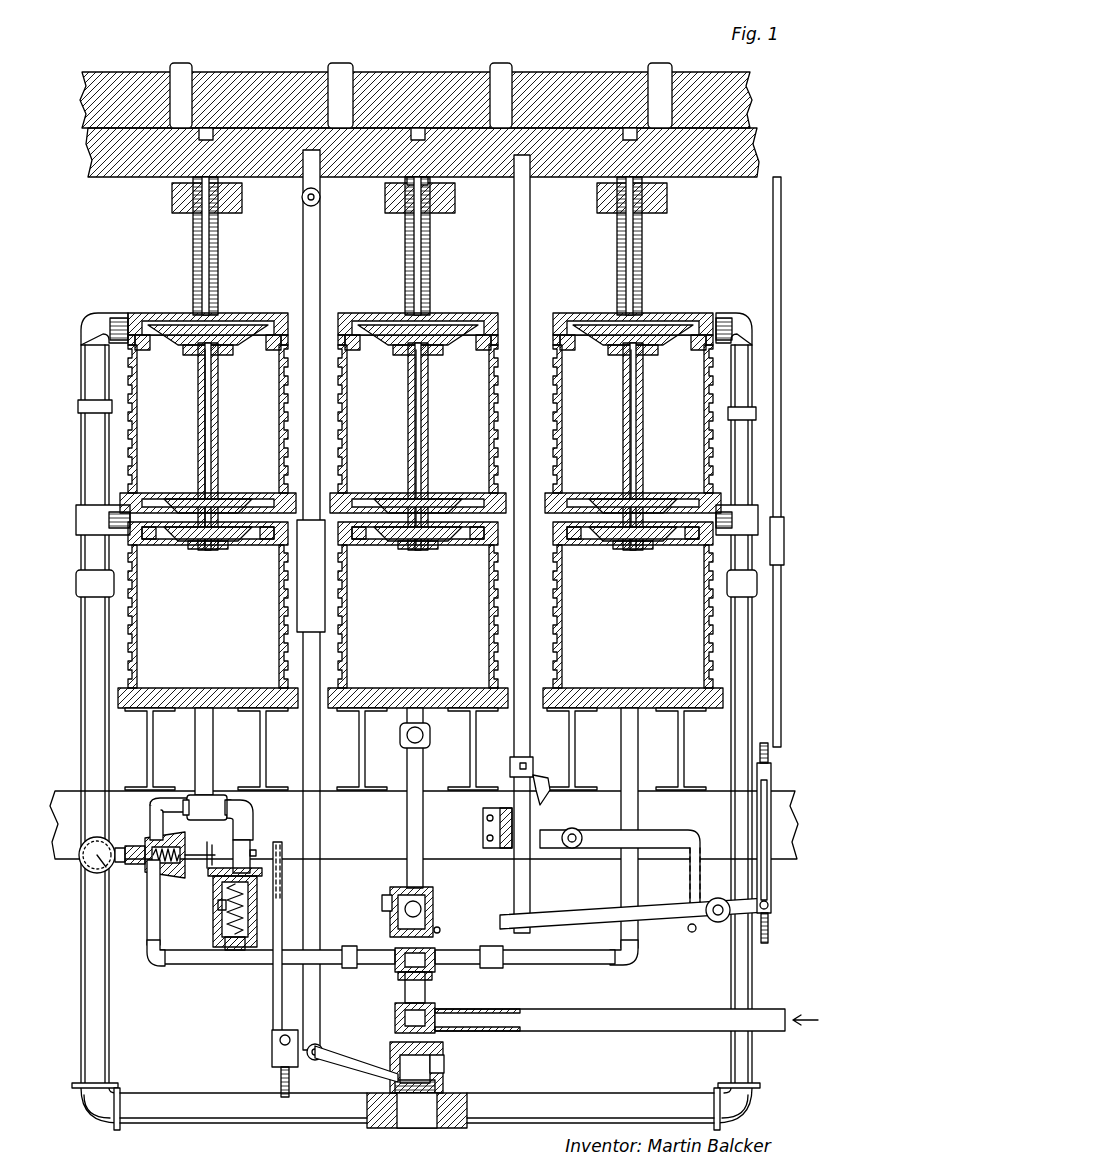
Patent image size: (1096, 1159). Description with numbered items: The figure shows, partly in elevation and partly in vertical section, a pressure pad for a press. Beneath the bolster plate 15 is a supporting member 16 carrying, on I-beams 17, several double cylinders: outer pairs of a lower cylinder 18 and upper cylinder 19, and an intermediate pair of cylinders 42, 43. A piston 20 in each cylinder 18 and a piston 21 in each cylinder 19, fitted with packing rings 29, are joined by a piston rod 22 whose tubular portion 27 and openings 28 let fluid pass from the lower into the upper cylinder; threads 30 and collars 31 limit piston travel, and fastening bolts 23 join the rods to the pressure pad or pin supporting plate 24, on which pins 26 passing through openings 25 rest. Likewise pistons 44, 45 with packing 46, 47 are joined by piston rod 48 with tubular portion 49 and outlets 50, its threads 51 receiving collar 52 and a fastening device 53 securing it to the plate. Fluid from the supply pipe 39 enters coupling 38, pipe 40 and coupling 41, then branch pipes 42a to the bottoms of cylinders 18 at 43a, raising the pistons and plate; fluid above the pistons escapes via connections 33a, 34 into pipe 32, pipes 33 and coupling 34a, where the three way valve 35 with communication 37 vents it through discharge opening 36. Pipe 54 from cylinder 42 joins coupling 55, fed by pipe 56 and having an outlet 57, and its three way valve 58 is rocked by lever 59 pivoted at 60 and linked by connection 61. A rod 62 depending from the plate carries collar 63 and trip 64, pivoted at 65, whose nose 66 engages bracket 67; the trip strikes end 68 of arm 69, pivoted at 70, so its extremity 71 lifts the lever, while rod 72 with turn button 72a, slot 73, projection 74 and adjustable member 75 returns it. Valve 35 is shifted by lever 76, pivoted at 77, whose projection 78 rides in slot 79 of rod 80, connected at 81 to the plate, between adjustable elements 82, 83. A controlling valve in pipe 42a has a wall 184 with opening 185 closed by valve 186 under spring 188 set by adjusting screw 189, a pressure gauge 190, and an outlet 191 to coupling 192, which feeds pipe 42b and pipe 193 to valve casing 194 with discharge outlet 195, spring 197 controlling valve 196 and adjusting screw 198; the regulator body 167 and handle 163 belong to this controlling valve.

The bolster plate 15 is at (755, 100).
The supporting member 16 is at (68, 859).
The I-beams 17 is at (147, 750).
The lower cylinder 18 is at (137, 645).
The upper cylinder 19 is at (137, 432).
The piston 20 is at (205, 550).
The piston 21 is at (258, 345).
The piston rod 22 is at (218, 452).
The fastening bolts 23 is at (212, 160).
The pressure pad or pin supporting plate 24 is at (105, 178).
The openings 25 is at (598, 72).
The pins 26 is at (505, 64).
The tubular portion 27 is at (203, 468).
The openings 28 is at (212, 355).
The packing rings 29 is at (145, 350).
The threads 30 is at (218, 248).
The collars 31 is at (242, 205).
The pipe 32 is at (81, 612).
The pipes 33 is at (248, 1124).
The pipe connection 33a is at (84, 535).
The pipe connection 34 is at (118, 313).
The coupling 34a is at (435, 1085).
The three way valve 35 is at (390, 1052).
The discharge opening 36 is at (444, 1063).
The communication 37 is at (395, 1020).
The coupling 38 is at (435, 1008).
The fluid supply pipe 39 is at (592, 1031).
The pipe 40 is at (405, 990).
The coupling 41 is at (395, 950).
The intermediate lower cylinder 42 is at (418, 626).
The branch pipes 42a is at (250, 965).
The pipe 42b is at (195, 748).
The intermediate upper cylinder 43 is at (418, 419).
The bottom connection 43a is at (208, 705).
The piston 44 is at (408, 550).
The piston 45 is at (388, 345).
The packing 46 is at (378, 548).
The packing 47 is at (360, 360).
The piston rod 48 is at (428, 398).
The tubular portion 49 is at (428, 461).
The outlets 50 is at (423, 355).
The threads 51 is at (430, 248).
The collar 52 is at (455, 208).
The fastening device 53 is at (440, 178).
The pipe 54 is at (425, 765).
The coupling 55 is at (433, 892).
The pipe 56 is at (433, 940).
The outlet 57 is at (382, 903).
The three way valve 58 is at (426, 905).
The lever 59 is at (595, 912).
The pivot 60 is at (714, 922).
The connection 61 is at (500, 920).
The rod 62 is at (530, 292).
The collar 63 is at (512, 762).
The trip 64 is at (550, 800).
The pivot 65 is at (545, 776).
The nose or finger portion 66 is at (510, 777).
The bracket 67 is at (512, 817).
The arm end 68 is at (558, 848).
The arm 69 is at (680, 830).
The pivot 70 is at (580, 832).
The arm extremity 71 is at (690, 930).
The rod 72 is at (781, 285).
The turn button 72a is at (784, 556).
The elongated slot 73 is at (771, 840).
The lateral projection 74 is at (771, 905).
The adjustable member 75 is at (770, 916).
The lever 76 is at (345, 1062).
The pivot 77 is at (316, 1044).
The lateral projecting portion 78 is at (280, 1040).
The elongated slot 79 is at (273, 1015).
The rod 80 is at (320, 292).
The connection 81 is at (305, 205).
The adjustable element 82 is at (281, 1080).
The adjustable element 83 is at (238, 842).
The handle 163 is at (196, 866).
The regulator body 167 is at (183, 842).
The wall 184 is at (148, 880).
The opening 185 is at (148, 940).
The valve 186 is at (128, 862).
The spring 188 is at (183, 878).
The adjusting screw 189 is at (264, 852).
The pressure gauge 190 is at (92, 836).
The outlet 191 is at (152, 840).
The coupling 192 is at (212, 796).
The pipe 193 is at (253, 812).
The valve casing 194 is at (222, 940).
The discharge outlet 195 is at (220, 907).
The valve 196 is at (258, 906).
The spring 197 is at (258, 912).
The adjusting screw 198 is at (232, 952).